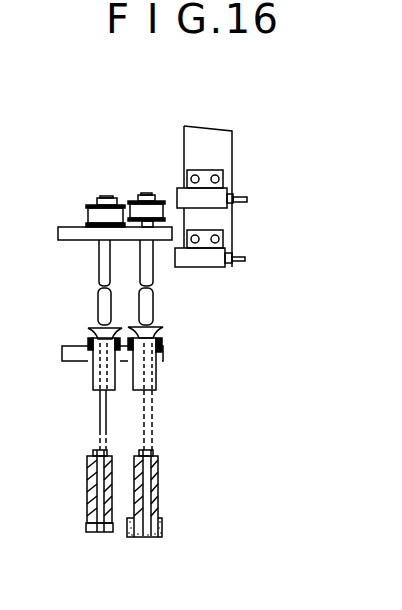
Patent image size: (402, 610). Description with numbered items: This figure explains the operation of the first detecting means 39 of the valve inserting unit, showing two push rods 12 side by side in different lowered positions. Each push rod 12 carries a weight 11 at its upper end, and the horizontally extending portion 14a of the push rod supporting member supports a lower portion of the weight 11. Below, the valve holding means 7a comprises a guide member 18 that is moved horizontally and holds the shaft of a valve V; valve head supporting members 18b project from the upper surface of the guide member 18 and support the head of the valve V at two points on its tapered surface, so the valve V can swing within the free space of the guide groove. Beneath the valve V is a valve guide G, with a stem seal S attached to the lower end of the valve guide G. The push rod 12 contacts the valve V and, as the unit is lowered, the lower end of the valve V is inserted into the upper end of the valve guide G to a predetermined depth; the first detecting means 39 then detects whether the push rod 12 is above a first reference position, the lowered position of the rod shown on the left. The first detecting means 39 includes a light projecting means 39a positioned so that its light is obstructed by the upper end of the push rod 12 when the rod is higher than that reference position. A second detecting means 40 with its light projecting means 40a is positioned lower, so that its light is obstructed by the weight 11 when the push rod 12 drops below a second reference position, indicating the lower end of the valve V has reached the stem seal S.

The weight 11 is at (95, 213).
The horizontally extending portion 14a is at (67, 230).
The push rod 12 is at (100, 265).
The valve head supporting members 18b is at (89, 345).
The guide member 18 is at (97, 378).
The valve holding means 7a is at (172, 359).
The valve V is at (157, 426).
The valve guide G is at (157, 477).
The stem seal S is at (160, 528).
The first detecting means 39 is at (248, 188).
The light projecting means 39a is at (205, 200).
The second detecting means 40 is at (227, 275).
The light projecting means 40a is at (203, 258).